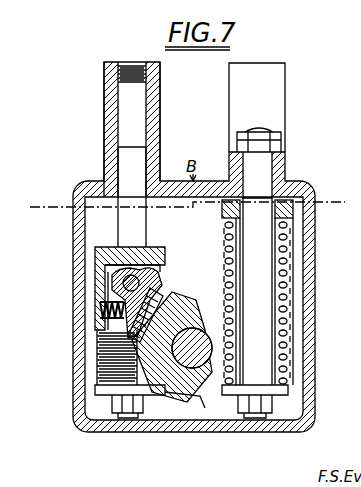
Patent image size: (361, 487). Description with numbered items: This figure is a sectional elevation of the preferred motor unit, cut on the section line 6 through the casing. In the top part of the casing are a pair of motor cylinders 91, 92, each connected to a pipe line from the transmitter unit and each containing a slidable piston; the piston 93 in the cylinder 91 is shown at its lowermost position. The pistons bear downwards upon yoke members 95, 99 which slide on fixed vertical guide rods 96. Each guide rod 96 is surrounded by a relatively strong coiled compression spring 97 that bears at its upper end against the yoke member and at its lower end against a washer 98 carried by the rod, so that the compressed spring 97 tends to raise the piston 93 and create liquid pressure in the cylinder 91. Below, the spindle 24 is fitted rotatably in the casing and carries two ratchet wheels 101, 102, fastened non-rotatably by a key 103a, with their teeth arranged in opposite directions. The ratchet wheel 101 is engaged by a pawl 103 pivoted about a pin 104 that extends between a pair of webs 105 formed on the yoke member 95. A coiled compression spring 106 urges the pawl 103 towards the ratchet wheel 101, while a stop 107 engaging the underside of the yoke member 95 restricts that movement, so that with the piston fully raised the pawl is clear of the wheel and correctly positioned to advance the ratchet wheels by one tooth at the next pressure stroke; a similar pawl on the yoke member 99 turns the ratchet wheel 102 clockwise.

The section line 6- 6 is at (40, 198).
The motor cylinder 91 is at (110, 108).
The motor cylinder 92 is at (280, 110).
The piston 93 is at (125, 224).
The yoke member 95 is at (95, 256).
The guide rod 96 is at (258, 373).
The coiled compression spring 97 is at (98, 376).
The washer 98 is at (285, 390).
The yoke member 99 is at (288, 210).
The ratchet wheel 101 is at (182, 300).
The ratchet wheel 102 is at (215, 325).
The pawl 103 is at (110, 340).
The key 103a is at (188, 398).
The pin 104 is at (123, 286).
The web 105 is at (105, 275).
The coiled compression spring 106 is at (100, 312).
The stop 107 is at (160, 266).
The spindle 24 is at (210, 372).